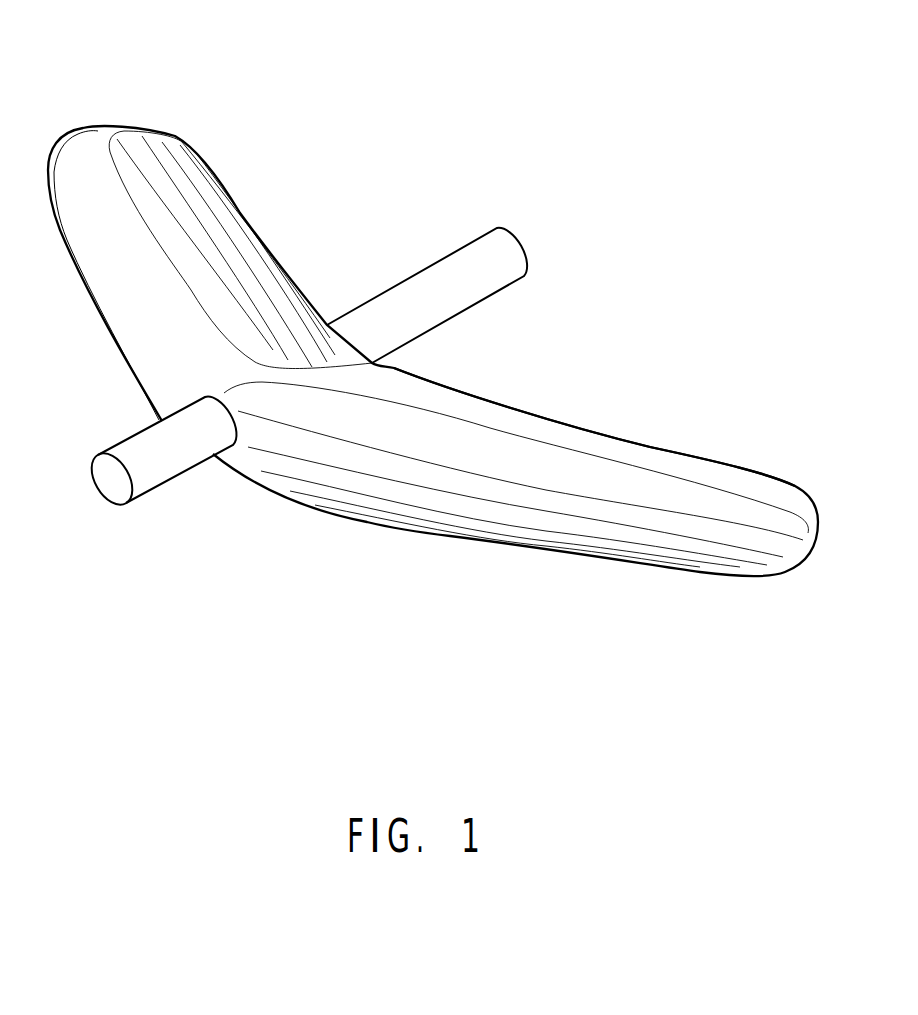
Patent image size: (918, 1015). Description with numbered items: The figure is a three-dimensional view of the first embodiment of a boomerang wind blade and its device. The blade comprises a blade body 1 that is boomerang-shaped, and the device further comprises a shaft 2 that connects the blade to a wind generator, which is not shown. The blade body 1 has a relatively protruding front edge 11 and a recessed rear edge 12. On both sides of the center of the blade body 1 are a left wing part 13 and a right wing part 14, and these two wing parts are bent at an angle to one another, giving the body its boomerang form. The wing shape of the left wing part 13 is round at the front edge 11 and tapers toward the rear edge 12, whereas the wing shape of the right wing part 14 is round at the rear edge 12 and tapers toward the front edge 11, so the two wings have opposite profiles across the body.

The blade body 1 is at (429, 325).
The shaft 2 is at (150, 477).
The front edge 11 is at (100, 318).
The rear edge 12 is at (620, 433).
The left wing part 13 is at (204, 240).
The right wing part 14 is at (633, 520).